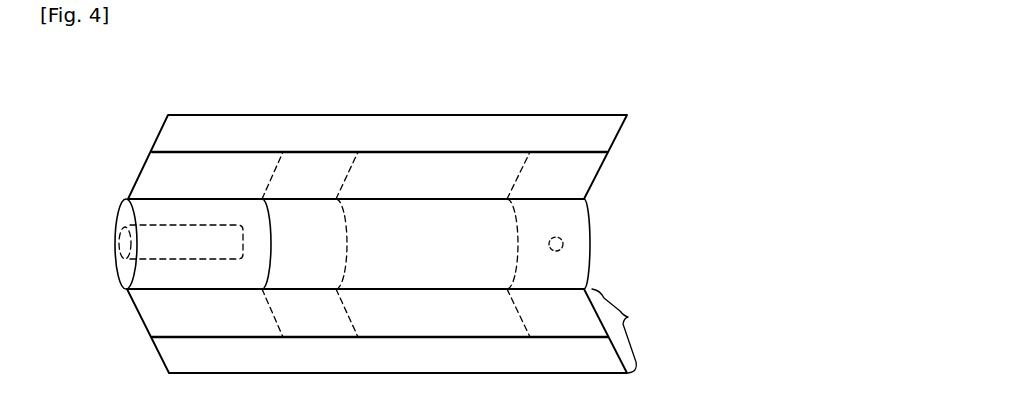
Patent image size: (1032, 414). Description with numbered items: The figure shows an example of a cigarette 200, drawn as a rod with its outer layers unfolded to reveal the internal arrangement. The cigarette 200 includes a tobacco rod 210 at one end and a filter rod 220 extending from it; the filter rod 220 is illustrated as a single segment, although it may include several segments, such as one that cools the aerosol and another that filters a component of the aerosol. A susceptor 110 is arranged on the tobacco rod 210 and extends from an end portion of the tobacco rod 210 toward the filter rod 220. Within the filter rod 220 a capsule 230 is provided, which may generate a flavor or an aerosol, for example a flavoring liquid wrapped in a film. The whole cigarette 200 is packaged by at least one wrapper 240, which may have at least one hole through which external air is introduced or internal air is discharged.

The cigarette 200 is at (613, 88).
The tobacco rod 210 is at (142, 210).
The filter rod 220 is at (413, 218).
The capsule 230 is at (563, 244).
The wrapper 240 is at (631, 331).
The susceptor 110 is at (197, 258).